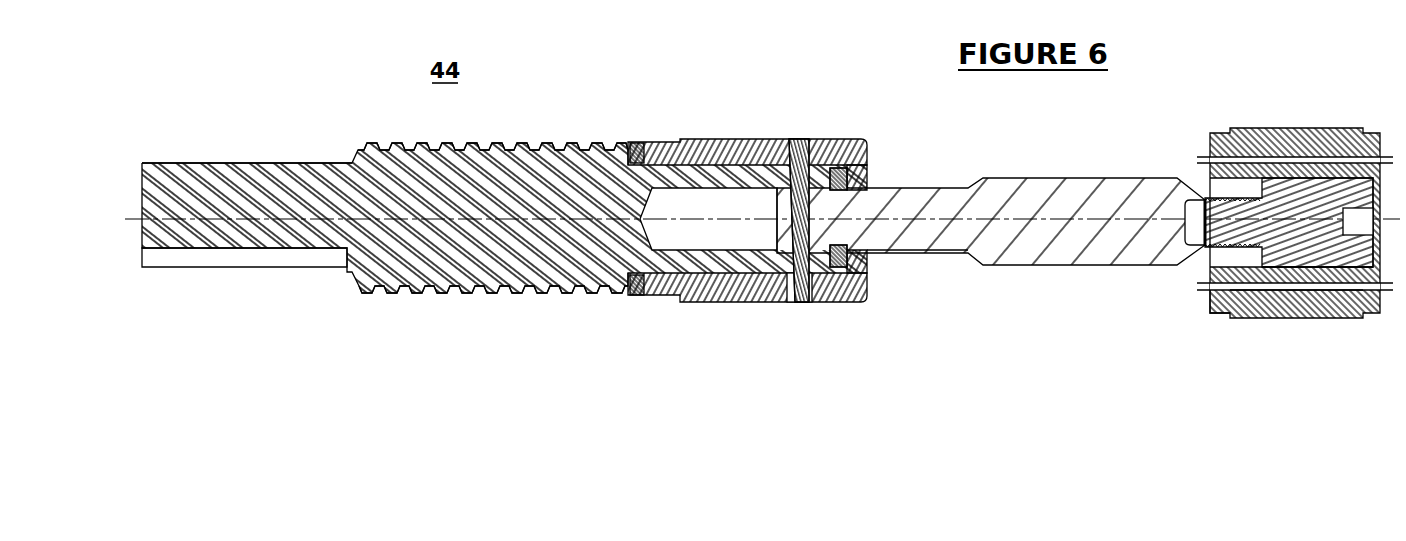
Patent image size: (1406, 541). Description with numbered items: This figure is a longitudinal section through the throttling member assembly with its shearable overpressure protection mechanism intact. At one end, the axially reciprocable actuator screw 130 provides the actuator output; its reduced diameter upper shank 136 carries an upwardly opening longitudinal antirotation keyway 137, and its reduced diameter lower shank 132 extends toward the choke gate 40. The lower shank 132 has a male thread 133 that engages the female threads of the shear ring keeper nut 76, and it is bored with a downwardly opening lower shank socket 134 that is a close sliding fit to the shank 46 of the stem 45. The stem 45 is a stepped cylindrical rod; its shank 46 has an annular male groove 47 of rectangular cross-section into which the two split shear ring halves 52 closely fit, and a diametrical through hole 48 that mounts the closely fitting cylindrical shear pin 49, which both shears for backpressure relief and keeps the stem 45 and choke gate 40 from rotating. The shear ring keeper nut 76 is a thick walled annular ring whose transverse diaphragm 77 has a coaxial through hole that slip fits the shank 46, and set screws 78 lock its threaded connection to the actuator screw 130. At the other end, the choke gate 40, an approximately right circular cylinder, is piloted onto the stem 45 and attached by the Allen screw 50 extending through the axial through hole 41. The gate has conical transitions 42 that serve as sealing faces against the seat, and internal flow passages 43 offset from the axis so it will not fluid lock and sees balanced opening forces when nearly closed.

The axially reciprocable actuator screw 130 is at (322, 163).
The upper shank 136 is at (232, 163).
The antirotation keyway 137 is at (222, 258).
The lower shank 132 is at (437, 290).
The shank 46 is at (917, 188).
The annular male groove 47 is at (867, 257).
The diametrical through hole 48 is at (783, 140).
The male thread 133 is at (667, 295).
The lower shank socket 134 is at (672, 142).
The set screws 78 is at (639, 297).
The shear ring keeper nut 76 is at (860, 140).
The transverse diaphragm 77 is at (863, 277).
The split shear ring halves 52 is at (860, 168).
The shear pin 49 is at (810, 142).
The choke gate 40 is at (1290, 130).
The axial through hole 41 is at (1313, 247).
The conical transitions 42 is at (1230, 313).
The internal flow passages 43 is at (1263, 287).
The Allen screw 50 is at (1303, 195).
The stem 45 is at (1183, 268).